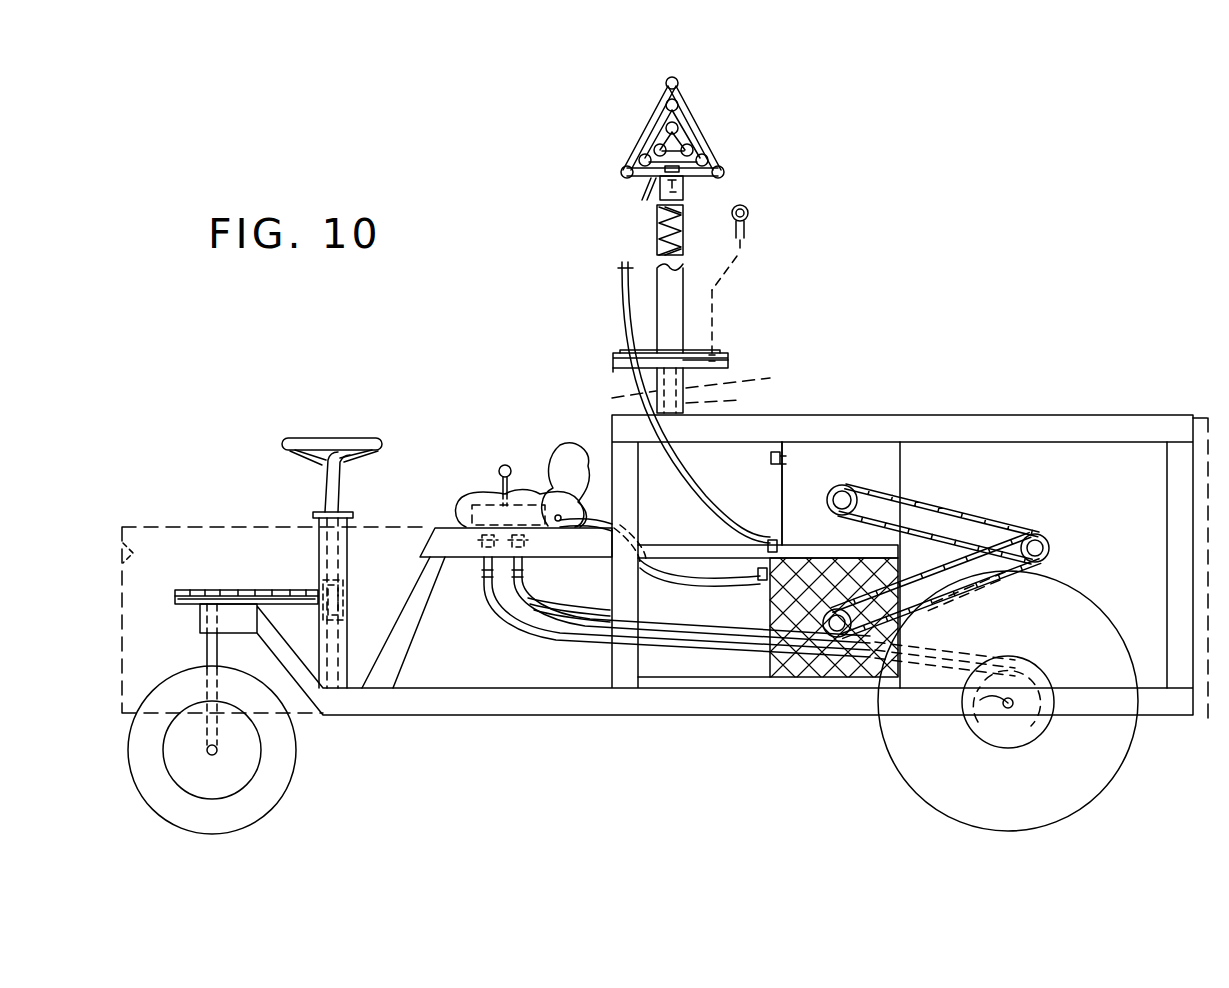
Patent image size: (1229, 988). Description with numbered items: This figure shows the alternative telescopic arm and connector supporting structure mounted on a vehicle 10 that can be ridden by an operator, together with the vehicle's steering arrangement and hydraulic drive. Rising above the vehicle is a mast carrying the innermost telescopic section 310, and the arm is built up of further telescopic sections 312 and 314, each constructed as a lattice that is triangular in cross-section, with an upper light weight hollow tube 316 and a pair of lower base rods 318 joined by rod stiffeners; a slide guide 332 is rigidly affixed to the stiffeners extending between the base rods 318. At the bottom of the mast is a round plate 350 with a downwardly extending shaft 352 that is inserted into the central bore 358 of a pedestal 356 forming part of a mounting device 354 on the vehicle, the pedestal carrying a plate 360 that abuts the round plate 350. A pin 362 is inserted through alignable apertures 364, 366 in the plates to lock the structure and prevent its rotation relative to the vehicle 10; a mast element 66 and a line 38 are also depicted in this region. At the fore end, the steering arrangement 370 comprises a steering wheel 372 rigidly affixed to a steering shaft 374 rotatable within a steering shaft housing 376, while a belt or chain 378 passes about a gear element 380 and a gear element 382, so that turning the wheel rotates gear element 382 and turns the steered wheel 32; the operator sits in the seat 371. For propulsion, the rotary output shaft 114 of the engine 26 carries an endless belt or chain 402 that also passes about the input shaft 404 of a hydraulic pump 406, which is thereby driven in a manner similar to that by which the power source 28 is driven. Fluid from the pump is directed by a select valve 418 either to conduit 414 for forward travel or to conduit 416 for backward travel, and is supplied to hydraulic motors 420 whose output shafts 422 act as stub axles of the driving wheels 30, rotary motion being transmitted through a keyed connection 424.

The vehicle 10 is at (1071, 394).
The engine 26 is at (1108, 465).
The power source 28 is at (876, 440).
The driving wheel 30 is at (1078, 792).
The steered wheel 32 is at (266, 786).
The hydraulic line 38 is at (682, 470).
The mast section 66 is at (657, 220).
The rotary output shaft 114 is at (1040, 540).
The telescopic section 310 is at (700, 92).
The telescopic section 312 is at (710, 132).
The telescopic section 314 is at (656, 128).
The upper hollow tube 316 is at (676, 84).
The base rod 318 is at (626, 164).
The slide guide 332 is at (708, 148).
The round plate 350 is at (620, 354).
The shaft 352 is at (730, 401).
The mounting device 354 is at (745, 365).
The pedestal 356 is at (651, 493).
The central bore 358 is at (686, 392).
The plate 360 is at (618, 368).
The pin 362 is at (742, 234).
The aperture 364 is at (716, 352).
The aperture 366 is at (732, 354).
The steering arrangement 370 is at (292, 515).
The seat 371 is at (472, 498).
The steering wheel 372 is at (362, 439).
The steering shaft 374 is at (346, 506).
The steering shaft housing 376 is at (346, 560).
The belt or chain 378 is at (288, 588).
The gear element 380 is at (346, 598).
The gear element 382 is at (182, 606).
The endless belt or chain 402 is at (1034, 560).
The input shaft 404 is at (838, 640).
The hydraulic pump 406 is at (795, 669).
The conduit 414 is at (527, 606).
The conduit 416 is at (600, 602).
The select valve 418 is at (509, 455).
The hydraulic motor 420 is at (1043, 714).
The output shaft 422 is at (1026, 698).
The keyed connection 424 is at (980, 700).